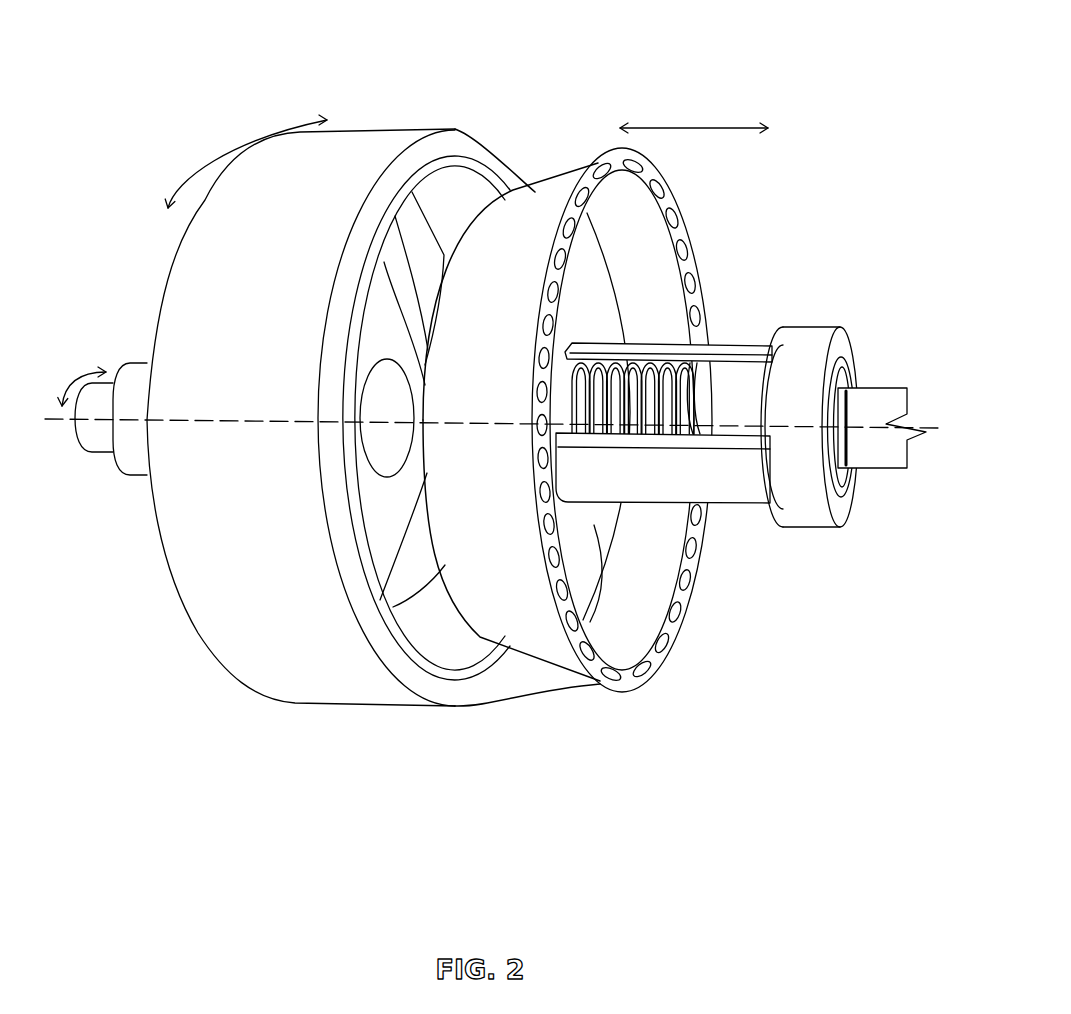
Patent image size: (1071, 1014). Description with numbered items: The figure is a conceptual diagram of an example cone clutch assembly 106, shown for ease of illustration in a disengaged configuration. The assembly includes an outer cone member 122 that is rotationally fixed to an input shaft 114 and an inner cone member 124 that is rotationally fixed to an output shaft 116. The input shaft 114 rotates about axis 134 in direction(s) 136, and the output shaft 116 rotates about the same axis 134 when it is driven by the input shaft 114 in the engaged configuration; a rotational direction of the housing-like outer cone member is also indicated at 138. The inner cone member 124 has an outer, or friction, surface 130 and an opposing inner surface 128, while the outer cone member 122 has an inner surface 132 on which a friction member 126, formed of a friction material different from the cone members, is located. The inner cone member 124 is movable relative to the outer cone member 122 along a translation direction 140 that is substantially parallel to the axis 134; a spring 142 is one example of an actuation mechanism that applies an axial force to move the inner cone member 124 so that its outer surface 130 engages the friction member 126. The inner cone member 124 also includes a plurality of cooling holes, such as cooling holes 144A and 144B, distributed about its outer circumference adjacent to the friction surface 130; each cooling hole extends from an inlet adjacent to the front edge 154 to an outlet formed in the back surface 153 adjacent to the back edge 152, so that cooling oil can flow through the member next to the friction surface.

The cone clutch assembly 106 is at (741, 47).
The input shaft 114 is at (97, 445).
The output shaft 116 is at (870, 402).
The outer cone member 122 is at (307, 685).
The inner cone member 124 is at (543, 197).
The friction member 126 is at (487, 168).
The inner surface 128 is at (647, 613).
The outer surface 130 is at (533, 640).
The inner surface 132 is at (407, 620).
The axis 134 is at (50, 422).
The direction 136 is at (72, 380).
The rotation direction of housing 138 is at (203, 147).
The translation direction 140 is at (695, 128).
The spring 142 is at (687, 365).
The cooling hole 144A is at (641, 168).
The cooling hole 144B is at (667, 185).
The back edge 152 is at (700, 577).
The back surface 153 is at (605, 667).
The front edge 154 is at (427, 497).